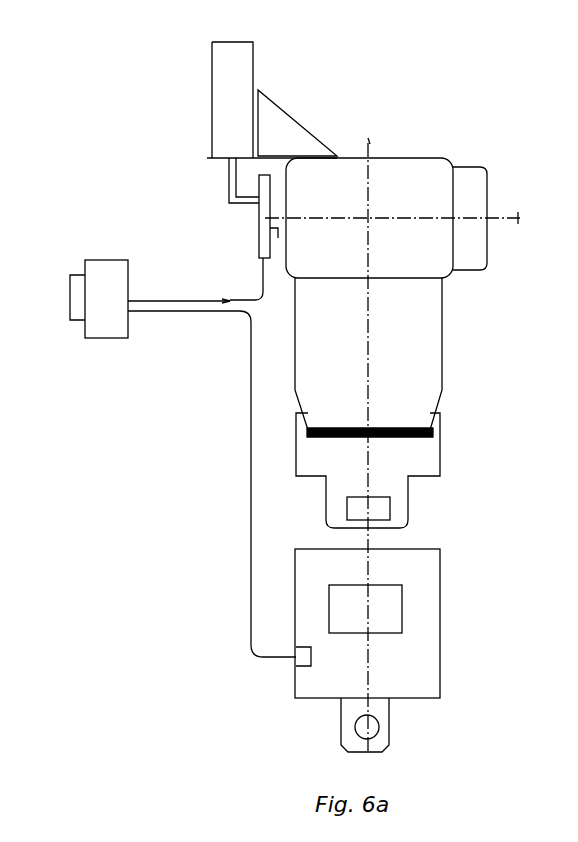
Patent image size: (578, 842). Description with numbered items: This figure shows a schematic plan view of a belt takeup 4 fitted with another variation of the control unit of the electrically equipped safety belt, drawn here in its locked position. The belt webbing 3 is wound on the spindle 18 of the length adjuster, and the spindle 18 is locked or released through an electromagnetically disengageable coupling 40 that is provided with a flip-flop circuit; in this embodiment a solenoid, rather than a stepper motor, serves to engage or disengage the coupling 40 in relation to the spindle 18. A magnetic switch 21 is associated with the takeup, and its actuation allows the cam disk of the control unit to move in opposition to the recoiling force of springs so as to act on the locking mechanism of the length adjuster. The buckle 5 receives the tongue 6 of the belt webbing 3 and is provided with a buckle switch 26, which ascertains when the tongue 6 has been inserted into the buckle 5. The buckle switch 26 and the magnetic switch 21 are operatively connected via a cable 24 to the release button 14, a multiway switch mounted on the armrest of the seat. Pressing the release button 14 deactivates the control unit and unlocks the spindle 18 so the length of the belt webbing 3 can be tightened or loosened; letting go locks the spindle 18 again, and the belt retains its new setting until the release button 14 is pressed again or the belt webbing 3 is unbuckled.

The magnetic switch 21 is at (243, 62).
The electromagnetically disengageable coupling 40 is at (259, 218).
The spindle 18 is at (278, 240).
The belt webbing 3 is at (432, 362).
The belt takeup 4 is at (478, 262).
The tongue 6 is at (445, 457).
The buckle 5 is at (430, 608).
The buckle switch 26 is at (292, 664).
The release button 14 is at (108, 258).
The cable 24 is at (172, 298).